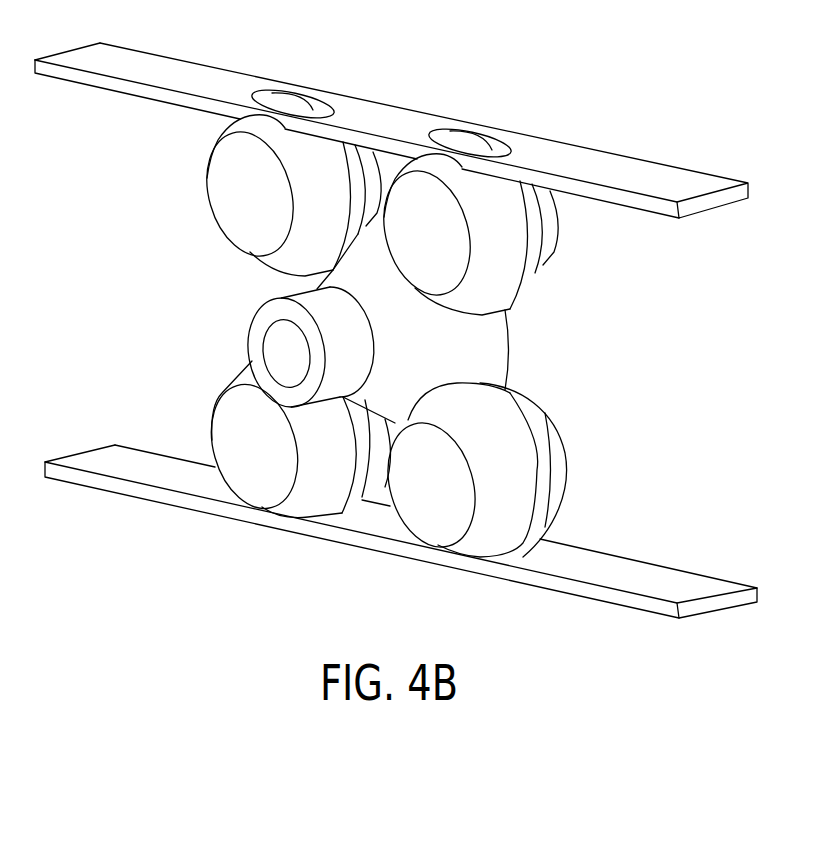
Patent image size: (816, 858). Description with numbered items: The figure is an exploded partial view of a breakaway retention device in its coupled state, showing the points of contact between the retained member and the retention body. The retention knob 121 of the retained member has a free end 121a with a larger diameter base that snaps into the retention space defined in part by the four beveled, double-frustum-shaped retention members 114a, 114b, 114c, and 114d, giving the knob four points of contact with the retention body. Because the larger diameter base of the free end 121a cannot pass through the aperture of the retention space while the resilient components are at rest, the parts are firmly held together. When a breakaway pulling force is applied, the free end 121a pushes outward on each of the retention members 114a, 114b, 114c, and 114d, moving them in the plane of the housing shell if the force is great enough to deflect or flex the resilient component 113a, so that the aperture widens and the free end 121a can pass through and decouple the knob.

The resilient component 113a is at (623, 168).
The retention member 114a is at (230, 208).
The retention member 114b is at (502, 262).
The retention member 114c is at (253, 490).
The retention member 114d is at (522, 483).
The retention knob 121 is at (255, 331).
The free end 121a is at (493, 328).